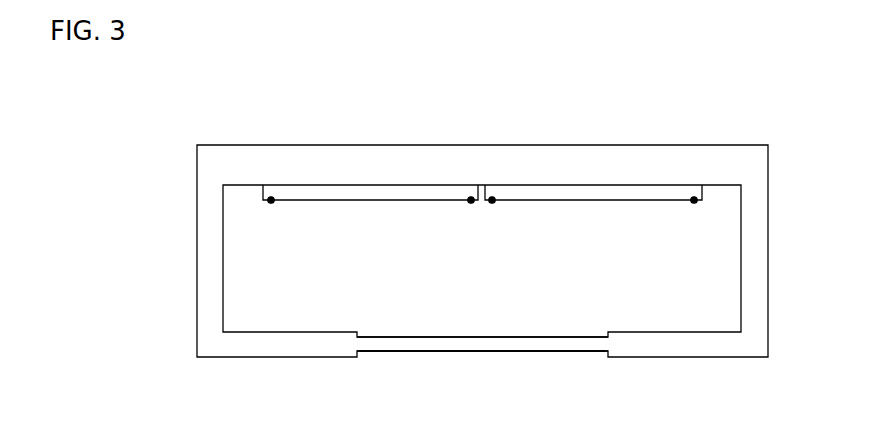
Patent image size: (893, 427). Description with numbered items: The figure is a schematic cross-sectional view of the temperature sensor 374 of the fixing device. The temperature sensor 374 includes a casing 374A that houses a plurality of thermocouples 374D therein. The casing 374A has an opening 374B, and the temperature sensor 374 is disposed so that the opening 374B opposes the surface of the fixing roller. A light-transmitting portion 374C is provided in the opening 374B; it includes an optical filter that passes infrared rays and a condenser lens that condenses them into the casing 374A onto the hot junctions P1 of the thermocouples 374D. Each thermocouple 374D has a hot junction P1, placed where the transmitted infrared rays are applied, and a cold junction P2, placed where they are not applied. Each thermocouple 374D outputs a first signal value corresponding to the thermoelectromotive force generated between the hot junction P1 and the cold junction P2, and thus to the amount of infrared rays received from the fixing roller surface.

The temperature sensor 374 is at (243, 120).
The casing 374A is at (196, 249).
The opening 374B is at (411, 358).
The light-transmitting portion 374C is at (480, 353).
The thermocouples 374D is at (366, 202).
The hot junction P1 is at (471, 197).
The cold junction P2 is at (270, 197).